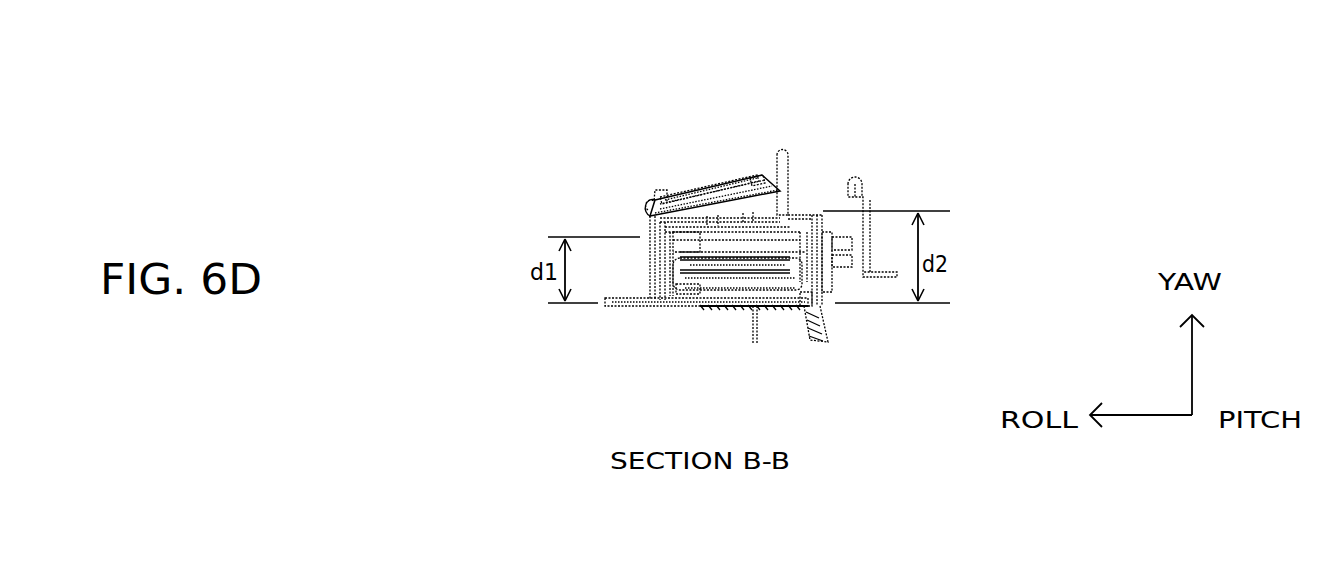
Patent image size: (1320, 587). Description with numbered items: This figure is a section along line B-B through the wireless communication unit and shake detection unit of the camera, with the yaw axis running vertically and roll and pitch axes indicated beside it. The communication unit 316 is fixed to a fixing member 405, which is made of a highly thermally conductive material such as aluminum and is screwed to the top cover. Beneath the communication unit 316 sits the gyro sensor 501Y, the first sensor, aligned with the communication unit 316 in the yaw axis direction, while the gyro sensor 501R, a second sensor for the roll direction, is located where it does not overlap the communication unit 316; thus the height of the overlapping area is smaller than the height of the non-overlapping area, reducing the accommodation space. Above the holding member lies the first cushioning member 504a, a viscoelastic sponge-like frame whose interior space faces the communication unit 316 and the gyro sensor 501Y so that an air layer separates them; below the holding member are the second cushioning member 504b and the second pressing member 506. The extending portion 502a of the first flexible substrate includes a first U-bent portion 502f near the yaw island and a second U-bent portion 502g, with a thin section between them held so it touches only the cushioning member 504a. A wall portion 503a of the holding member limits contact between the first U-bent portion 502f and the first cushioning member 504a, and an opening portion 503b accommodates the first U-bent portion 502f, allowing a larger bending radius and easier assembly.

The fixing member 405 is at (648, 210).
The extending portion 502a is at (733, 258).
The communication unit 316 is at (708, 188).
The gyro sensor 501Y is at (758, 262).
The first cushioning member 504a is at (790, 242).
The wall portion 503a is at (797, 252).
The opening portion 503b is at (788, 272).
The second pressing member 506 is at (691, 290).
The second U-bent portion 502g is at (665, 290).
The gyro sensor 501R is at (833, 270).
The first U-bent portion 502f is at (813, 302).
The second cushioning member 504b is at (791, 278).